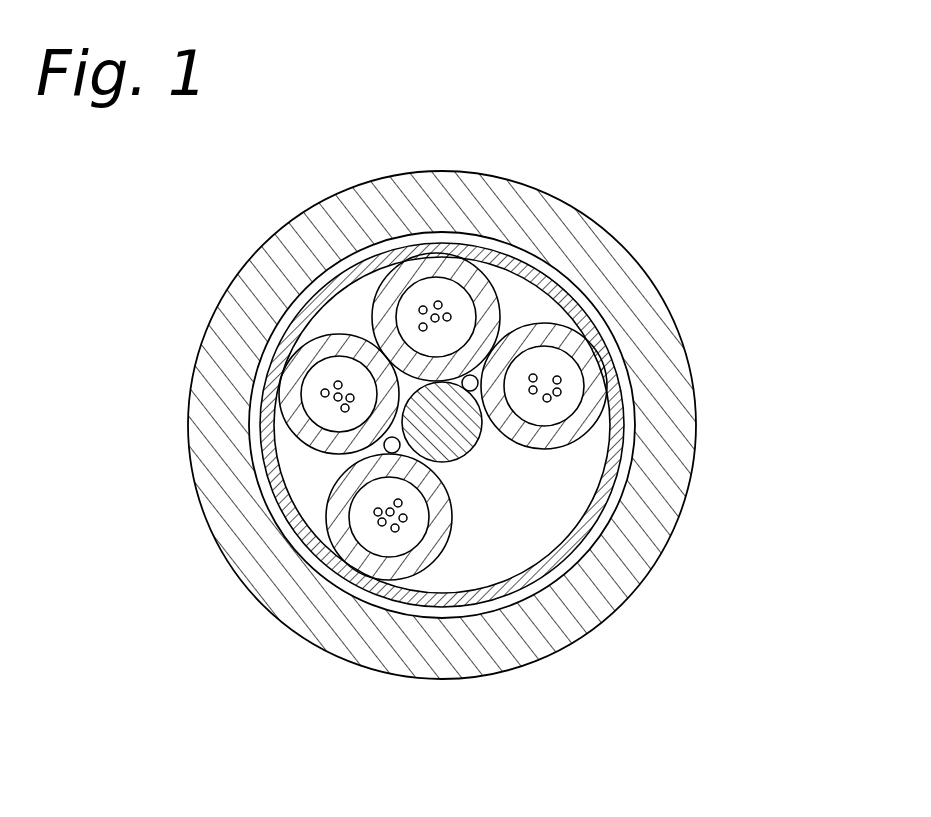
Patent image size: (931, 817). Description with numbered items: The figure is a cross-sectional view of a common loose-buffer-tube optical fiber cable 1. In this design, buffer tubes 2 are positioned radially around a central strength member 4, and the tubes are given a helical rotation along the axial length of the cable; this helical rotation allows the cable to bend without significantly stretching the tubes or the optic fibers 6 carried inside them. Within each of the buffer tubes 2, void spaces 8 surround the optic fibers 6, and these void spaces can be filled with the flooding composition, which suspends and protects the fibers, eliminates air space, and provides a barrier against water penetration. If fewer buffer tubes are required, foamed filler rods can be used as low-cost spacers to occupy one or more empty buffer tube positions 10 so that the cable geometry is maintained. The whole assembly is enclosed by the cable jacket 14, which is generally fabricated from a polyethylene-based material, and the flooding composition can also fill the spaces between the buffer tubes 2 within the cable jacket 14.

The optical fiber cable 1 is at (606, 164).
The buffer tubes 2 is at (632, 318).
The central strength member 4 is at (478, 443).
The optic fibers 6 is at (561, 378).
The void spaces 8 is at (567, 402).
The empty buffer tube positions 10 is at (463, 570).
The cable jacket 14 is at (553, 620).